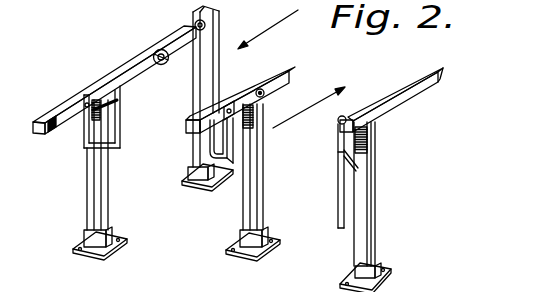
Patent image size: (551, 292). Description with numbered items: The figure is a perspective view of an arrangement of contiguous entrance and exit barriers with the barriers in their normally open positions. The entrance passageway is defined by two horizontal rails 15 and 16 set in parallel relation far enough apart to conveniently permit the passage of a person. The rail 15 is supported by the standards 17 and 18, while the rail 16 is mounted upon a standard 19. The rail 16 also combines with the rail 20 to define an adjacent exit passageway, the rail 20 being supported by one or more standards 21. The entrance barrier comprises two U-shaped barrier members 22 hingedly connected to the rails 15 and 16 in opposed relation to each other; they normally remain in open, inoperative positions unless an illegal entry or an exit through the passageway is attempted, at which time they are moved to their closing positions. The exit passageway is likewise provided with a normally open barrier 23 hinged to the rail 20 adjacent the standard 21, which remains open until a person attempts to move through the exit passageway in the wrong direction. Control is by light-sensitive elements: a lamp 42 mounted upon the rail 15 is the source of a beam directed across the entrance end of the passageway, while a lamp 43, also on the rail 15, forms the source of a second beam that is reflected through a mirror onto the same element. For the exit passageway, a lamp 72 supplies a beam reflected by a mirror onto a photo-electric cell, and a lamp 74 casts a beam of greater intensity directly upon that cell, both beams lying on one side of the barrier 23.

The horizontal rail 15 is at (135, 63).
The horizontal rail 16 is at (283, 68).
The standard 17 is at (90, 205).
The standard 18 is at (197, 68).
The standard 19 is at (247, 190).
The rail 20 is at (393, 97).
The standard 21 is at (375, 207).
The barrier member 22 is at (85, 142).
The barrier 23 is at (338, 198).
The lamp 42 is at (163, 49).
The lamp 43 is at (57, 114).
The lamp 72 is at (226, 100).
The lamp 74 is at (266, 92).